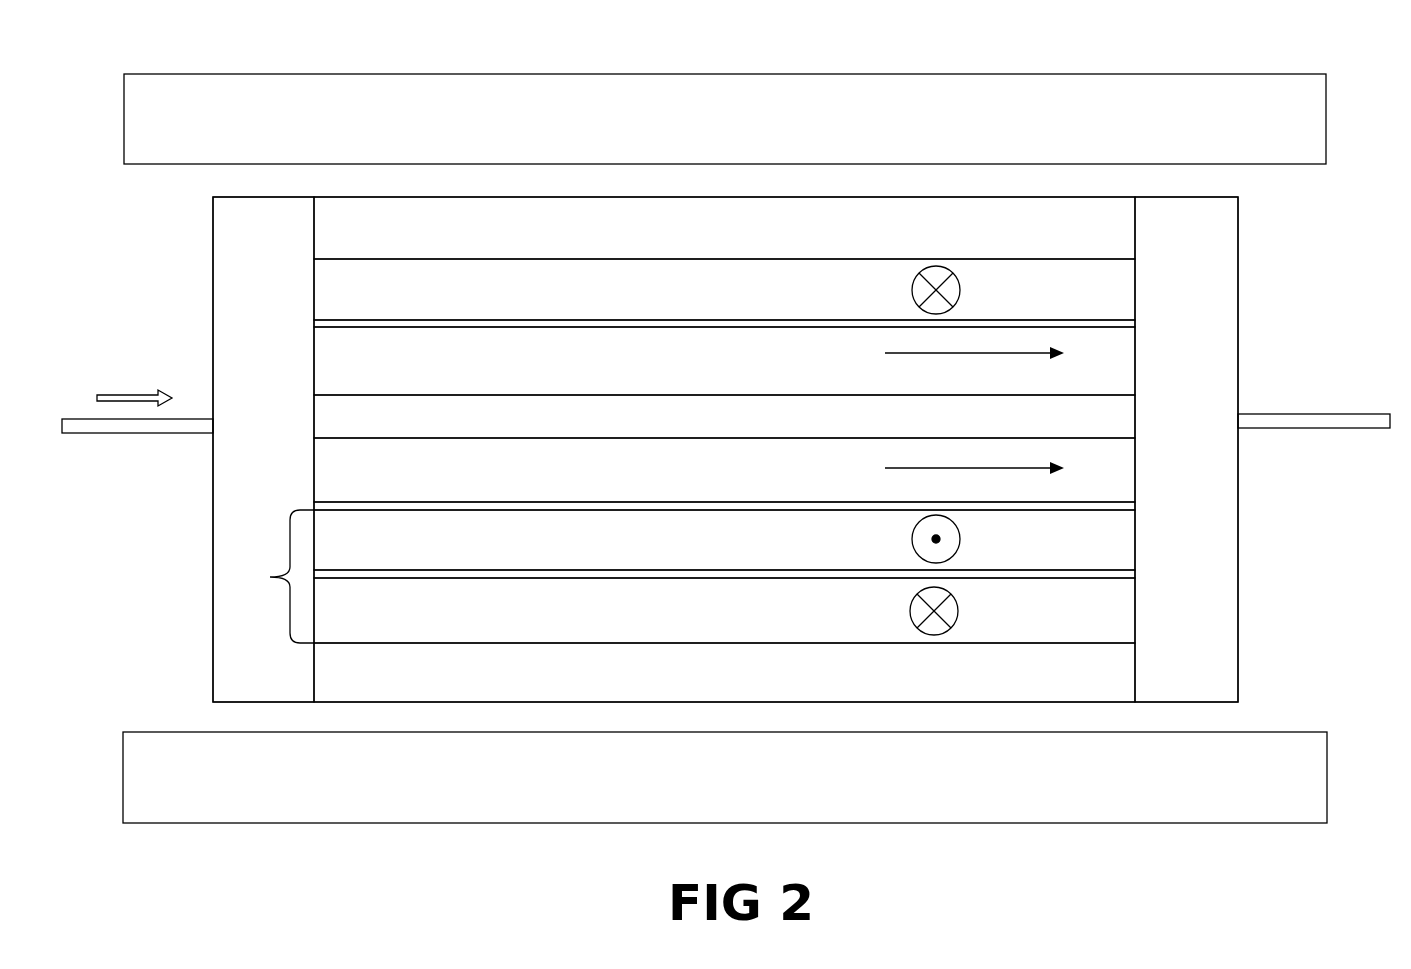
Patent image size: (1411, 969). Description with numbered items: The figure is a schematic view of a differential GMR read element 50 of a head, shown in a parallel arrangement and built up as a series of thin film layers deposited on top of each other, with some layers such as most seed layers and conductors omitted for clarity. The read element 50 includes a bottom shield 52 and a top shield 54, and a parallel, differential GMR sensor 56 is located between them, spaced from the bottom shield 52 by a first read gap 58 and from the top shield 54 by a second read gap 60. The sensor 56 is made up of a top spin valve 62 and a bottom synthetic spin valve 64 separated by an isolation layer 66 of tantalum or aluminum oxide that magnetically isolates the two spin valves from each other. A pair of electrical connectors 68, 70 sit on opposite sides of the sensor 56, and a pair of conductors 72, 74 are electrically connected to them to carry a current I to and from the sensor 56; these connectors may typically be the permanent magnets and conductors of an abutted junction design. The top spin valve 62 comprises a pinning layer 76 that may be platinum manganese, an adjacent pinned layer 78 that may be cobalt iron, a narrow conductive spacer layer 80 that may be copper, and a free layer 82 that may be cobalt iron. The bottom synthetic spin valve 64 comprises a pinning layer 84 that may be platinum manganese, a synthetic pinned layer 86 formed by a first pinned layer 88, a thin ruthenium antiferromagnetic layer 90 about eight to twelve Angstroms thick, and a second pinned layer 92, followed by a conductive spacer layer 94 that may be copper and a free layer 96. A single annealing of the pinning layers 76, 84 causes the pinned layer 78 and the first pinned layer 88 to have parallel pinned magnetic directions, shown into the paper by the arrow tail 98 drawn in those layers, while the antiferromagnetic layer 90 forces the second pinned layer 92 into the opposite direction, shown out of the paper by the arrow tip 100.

The read element 50 is at (725, 487).
The bottom shield 52 is at (354, 798).
The top shield 54 is at (347, 133).
The differential GMR sensor 56 is at (132, 514).
The first read gap 58 is at (208, 712).
The second read gap 60 is at (190, 192).
The top spin valve 62 is at (1300, 241).
The bottom synthetic spin valve 64 is at (1288, 680).
The isolation layer 66 is at (429, 432).
The electrical connector 68 is at (247, 262).
The electrical connector 70 is at (1172, 245).
The conductor 72 is at (165, 433).
The conductor 74 is at (1313, 428).
The pinning layer 76 is at (429, 242).
The pinned layer 78 is at (429, 302).
The conductive spacer layer 80 is at (1110, 322).
The free layer 82 is at (429, 372).
The pinning layer 84 is at (429, 688).
The synthetic pinned layer 86 is at (721, 576).
The first pinned layer 88 is at (429, 623).
The thin antiferromagnetic layer 90 is at (1105, 572).
The second pinned layer 92 is at (429, 553).
The conductive spacer layer 94 is at (1105, 503).
The free layer 96 is at (429, 483).
The arrow tail 98 is at (960, 290).
The arrow tip 100 is at (960, 539).